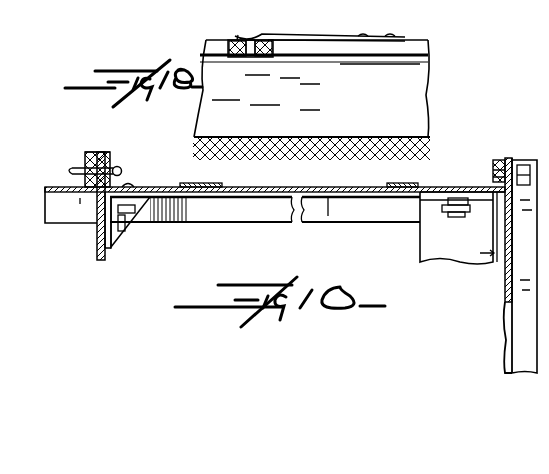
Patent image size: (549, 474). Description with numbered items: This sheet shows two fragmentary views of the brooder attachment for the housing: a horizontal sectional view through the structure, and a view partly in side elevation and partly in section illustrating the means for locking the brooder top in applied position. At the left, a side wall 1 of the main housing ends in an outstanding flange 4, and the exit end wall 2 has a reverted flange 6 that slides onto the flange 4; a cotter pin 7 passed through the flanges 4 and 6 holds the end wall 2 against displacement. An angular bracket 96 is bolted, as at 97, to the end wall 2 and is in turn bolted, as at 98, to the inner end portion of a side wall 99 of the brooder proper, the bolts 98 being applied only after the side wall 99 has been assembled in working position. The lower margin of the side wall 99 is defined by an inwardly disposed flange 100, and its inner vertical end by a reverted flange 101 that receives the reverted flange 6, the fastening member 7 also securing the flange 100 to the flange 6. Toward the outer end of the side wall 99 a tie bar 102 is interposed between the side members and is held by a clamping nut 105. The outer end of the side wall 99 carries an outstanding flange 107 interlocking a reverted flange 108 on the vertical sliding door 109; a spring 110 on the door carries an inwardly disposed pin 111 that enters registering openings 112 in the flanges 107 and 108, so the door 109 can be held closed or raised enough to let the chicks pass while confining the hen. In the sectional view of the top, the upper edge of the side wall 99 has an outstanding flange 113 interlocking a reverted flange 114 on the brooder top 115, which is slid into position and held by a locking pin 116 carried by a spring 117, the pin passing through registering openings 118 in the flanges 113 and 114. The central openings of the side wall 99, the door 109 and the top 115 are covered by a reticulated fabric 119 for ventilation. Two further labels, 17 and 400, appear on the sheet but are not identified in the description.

In FIG. 16, the side wall 1 is at (52, 186).
In FIG. 16, the end wall 2 is at (100, 260).
In FIG. 16, the outstanding flange 4 is at (97, 152).
In FIG. 16, the reverted flange 6 is at (76, 165).
In FIG. 16, the cotter pin 7 is at (126, 180).
In FIG. 18, the leader line 17 is at (182, 0).
In FIG. 16, the angular bracket 96 is at (128, 226).
In FIG. 16, the bolt 97 is at (95, 228).
In FIG. 16, the bolt 98 is at (130, 186).
In FIG. 18, the side wall of the brooder 99 is at (413, 90).
In FIG. 16, the side wall of the brooder 99 is at (421, 185).
In FIG. 16, the inwardly disposed flange 100 is at (260, 212).
In FIG. 16, the reverted flange 101 is at (112, 150).
In FIG. 18, the tie bar 102 is at (408, 10).
In FIG. 18, the clamping nut 105 is at (397, 12).
In FIG. 16, the outstanding flange 107 is at (508, 158).
In FIG. 16, the reverted flange 108 is at (493, 166).
In FIG. 16, the sliding closure member or door 109 is at (500, 262).
In FIG. 16, the spring 110 is at (523, 165).
In FIG. 16, the pin 111 is at (530, 261).
In FIG. 16, the registering openings 112 is at (493, 171).
In FIG. 18, the outstanding flange 113 is at (270, 50).
In FIG. 18, the reverted flange 114 is at (237, 57).
In FIG. 18, the brooder top 115 is at (237, 40).
In FIG. 18, the locking pin 116 is at (251, 36).
In FIG. 18, the spring 117 is at (305, 33).
In FIG. 18, the registering openings 118 is at (262, 57).
In FIG. 16, the reticulated fabric 119 is at (328, 216).
In FIG. 18, the element 400 is at (62, 6).